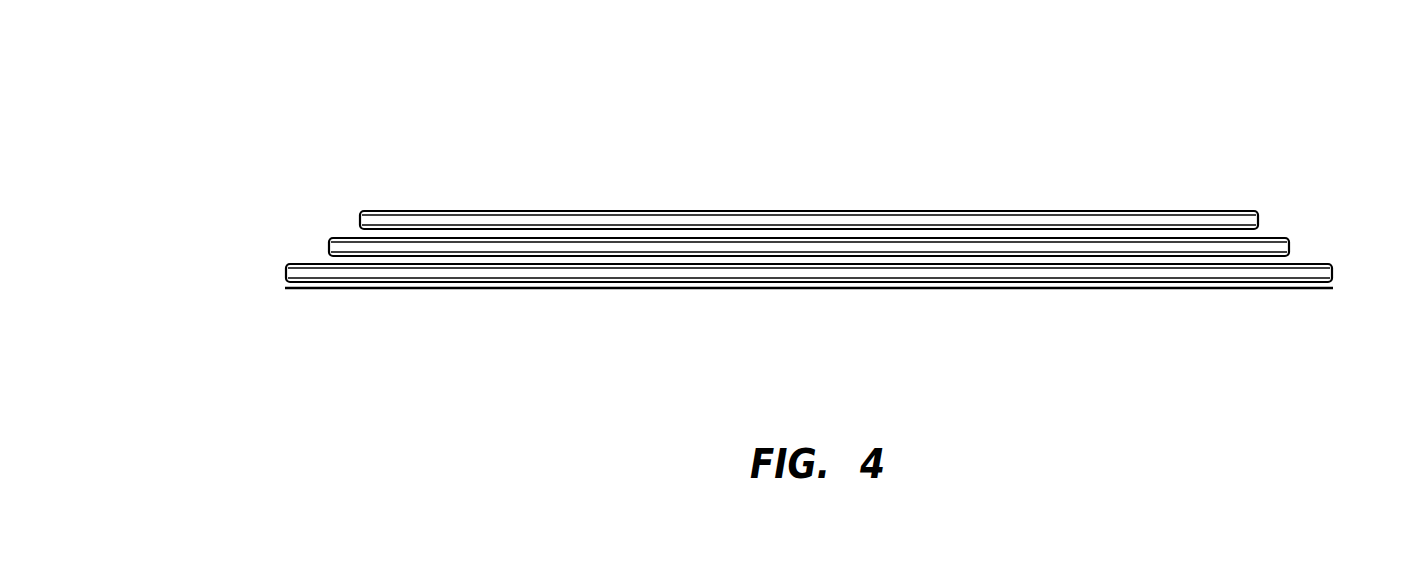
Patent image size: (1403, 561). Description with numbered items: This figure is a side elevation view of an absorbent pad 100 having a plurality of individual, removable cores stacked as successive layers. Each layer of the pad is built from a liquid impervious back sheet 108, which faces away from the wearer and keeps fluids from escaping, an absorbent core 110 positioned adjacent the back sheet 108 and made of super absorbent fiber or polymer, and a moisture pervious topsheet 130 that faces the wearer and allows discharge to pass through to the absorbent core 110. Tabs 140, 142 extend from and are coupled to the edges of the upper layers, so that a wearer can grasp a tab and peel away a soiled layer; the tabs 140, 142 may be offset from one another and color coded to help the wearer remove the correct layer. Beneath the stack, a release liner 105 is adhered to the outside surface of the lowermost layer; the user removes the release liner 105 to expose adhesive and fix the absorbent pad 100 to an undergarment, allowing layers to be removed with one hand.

The absorbent pad 100 is at (513, 128).
The release liner 105 is at (451, 288).
The back sheet 108 is at (285, 282).
The absorbent core 110 is at (286, 275).
The topsheet 130 is at (287, 265).
The tab 140 is at (1289, 248).
The tab 142 is at (1258, 222).